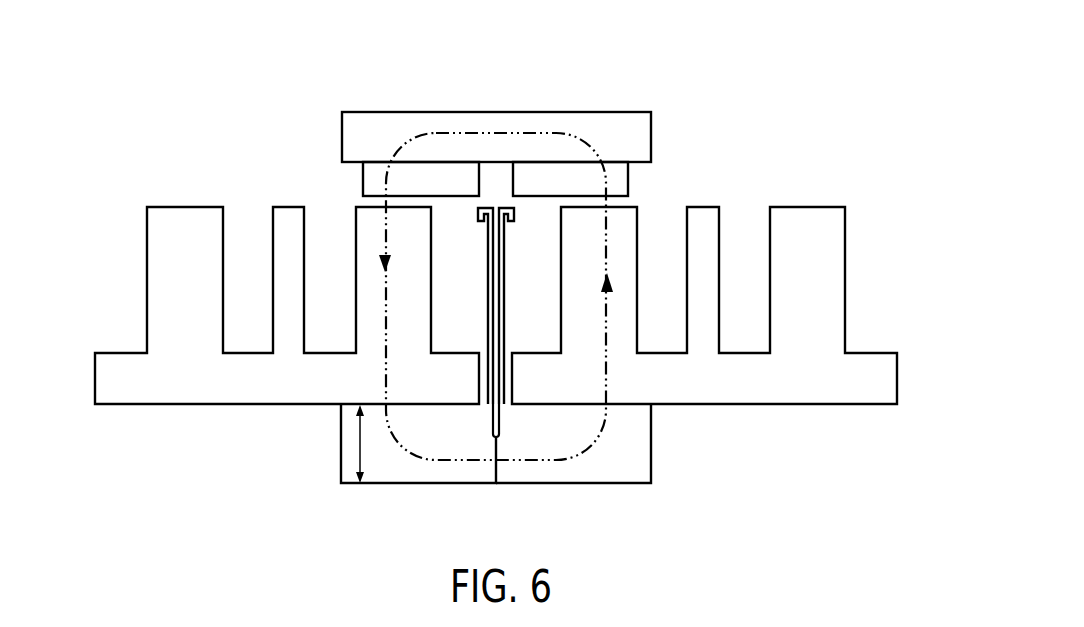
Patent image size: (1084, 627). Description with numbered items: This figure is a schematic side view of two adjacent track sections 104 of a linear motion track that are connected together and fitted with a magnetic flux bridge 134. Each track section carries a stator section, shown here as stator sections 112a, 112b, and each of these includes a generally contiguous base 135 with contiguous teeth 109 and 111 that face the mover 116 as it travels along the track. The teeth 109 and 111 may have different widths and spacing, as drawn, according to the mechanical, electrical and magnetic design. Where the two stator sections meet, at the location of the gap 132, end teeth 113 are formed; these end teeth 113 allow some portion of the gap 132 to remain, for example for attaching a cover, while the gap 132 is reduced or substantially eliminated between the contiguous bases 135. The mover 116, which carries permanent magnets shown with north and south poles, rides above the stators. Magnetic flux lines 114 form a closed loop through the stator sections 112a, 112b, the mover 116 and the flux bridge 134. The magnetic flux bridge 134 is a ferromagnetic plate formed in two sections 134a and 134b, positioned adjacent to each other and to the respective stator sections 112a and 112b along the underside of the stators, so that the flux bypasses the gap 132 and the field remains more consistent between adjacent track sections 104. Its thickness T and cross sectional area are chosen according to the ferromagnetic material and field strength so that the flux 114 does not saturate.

The track section 104 is at (494, 314).
The teeth 109 is at (170, 265).
The teeth 111 is at (286, 207).
The stator section 112a is at (280, 407).
The stator section 112b is at (805, 407).
The end teeth 113 is at (482, 250).
The magnetic flux lines 114 is at (483, 135).
The mover 116 is at (610, 46).
The gap 132 is at (496, 416).
The magnetic flux bridge 134 is at (491, 463).
The flux bridge section 134a is at (408, 484).
The flux bridge section 134b is at (608, 484).
The base 135 is at (172, 390).